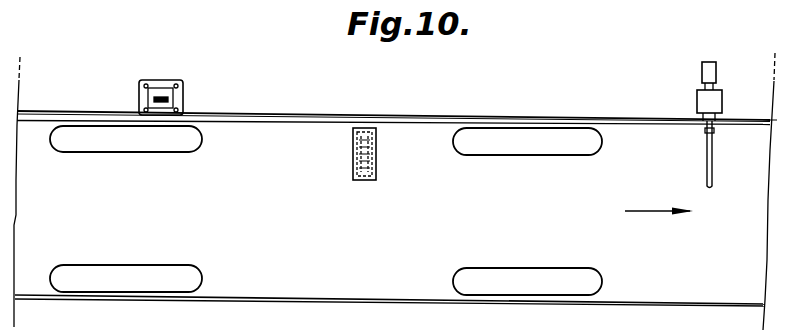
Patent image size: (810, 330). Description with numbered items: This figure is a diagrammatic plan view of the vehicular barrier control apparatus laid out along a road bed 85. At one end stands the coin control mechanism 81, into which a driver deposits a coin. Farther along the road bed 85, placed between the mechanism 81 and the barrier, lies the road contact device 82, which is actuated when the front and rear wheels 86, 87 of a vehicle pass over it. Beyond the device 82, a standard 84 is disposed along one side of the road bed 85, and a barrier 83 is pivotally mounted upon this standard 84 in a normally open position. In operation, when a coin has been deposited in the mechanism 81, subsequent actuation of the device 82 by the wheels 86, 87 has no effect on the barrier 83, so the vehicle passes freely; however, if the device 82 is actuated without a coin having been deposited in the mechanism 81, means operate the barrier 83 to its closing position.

The coin control mechanism 81 is at (178, 80).
The road contact device 82 is at (375, 140).
The barrier 83 is at (707, 158).
The standard 84 is at (716, 103).
The road bed 85 is at (643, 130).
The front wheels 86 is at (512, 138).
The rear wheels 87 is at (193, 132).